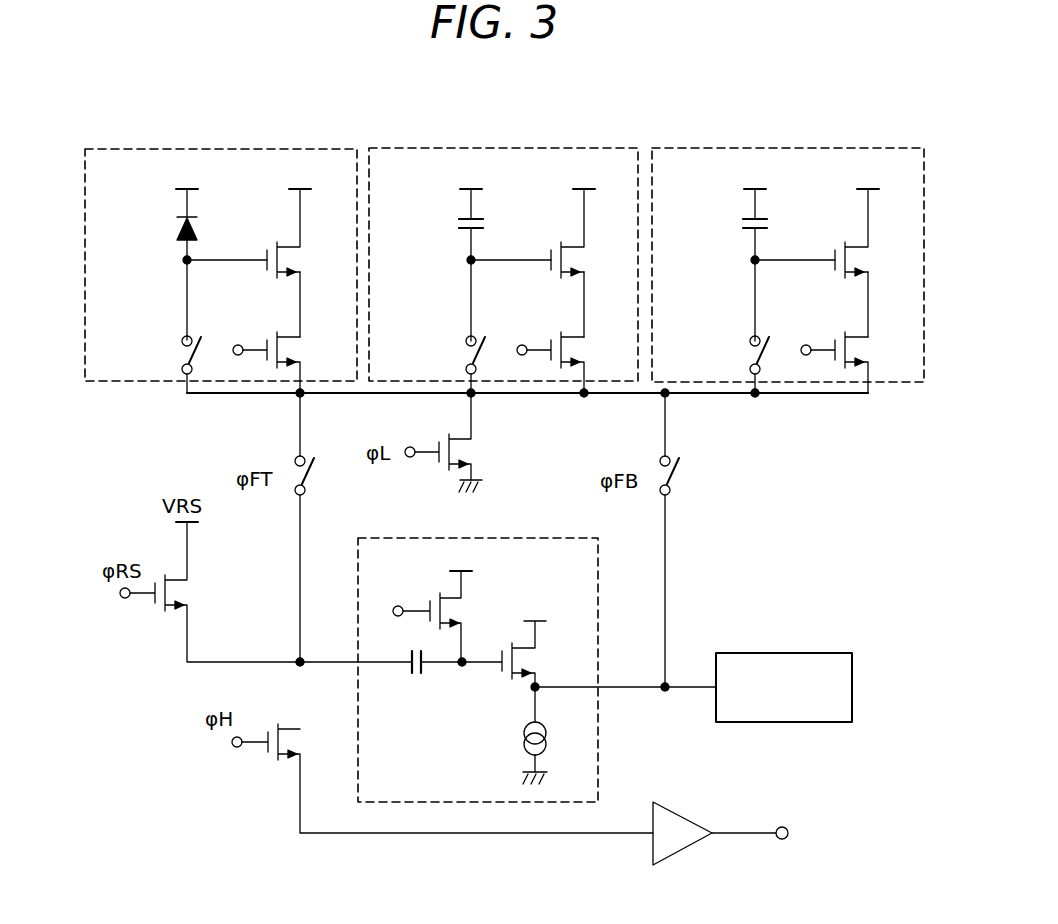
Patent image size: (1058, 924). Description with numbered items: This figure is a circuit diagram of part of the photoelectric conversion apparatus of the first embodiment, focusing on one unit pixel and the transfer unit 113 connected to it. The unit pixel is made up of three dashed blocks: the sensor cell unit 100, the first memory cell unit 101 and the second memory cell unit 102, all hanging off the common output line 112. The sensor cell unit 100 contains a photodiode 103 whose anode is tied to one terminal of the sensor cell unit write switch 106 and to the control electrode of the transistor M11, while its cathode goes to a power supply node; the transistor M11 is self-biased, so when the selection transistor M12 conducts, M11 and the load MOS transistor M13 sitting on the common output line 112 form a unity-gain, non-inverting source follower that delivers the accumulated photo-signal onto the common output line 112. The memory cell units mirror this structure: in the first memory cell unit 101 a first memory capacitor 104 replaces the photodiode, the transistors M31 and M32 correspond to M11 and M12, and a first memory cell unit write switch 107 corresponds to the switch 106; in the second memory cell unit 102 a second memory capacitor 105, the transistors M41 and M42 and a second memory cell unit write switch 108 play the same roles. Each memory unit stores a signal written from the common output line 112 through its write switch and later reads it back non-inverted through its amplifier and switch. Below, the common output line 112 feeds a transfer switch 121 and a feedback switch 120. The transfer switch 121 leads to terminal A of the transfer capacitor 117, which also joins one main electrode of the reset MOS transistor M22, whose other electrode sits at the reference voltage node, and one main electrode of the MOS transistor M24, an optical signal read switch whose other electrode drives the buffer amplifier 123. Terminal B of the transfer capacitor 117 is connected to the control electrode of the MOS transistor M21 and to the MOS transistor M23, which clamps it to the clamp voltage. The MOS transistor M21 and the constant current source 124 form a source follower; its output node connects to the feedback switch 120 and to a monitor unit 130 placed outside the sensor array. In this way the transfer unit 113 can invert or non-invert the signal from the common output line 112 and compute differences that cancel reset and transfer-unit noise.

The sensor cell unit 100 is at (213, 149).
The first memory cell unit 101 is at (496, 148).
The second memory cell unit 102 is at (780, 148).
The photodiode 103 is at (200, 231).
The first memory capacitor 104 is at (486, 224).
The second memory capacitor 105 is at (770, 224).
The sensor cell unit write switch 106 is at (178, 373).
The first memory cell unit write switch 107 is at (482, 357).
The second memory cell unit write switch 108 is at (766, 357).
The common output line 112 is at (850, 397).
The transfer unit 113 is at (437, 538).
The transfer capacitor 117 is at (413, 679).
The feedback switch 120 is at (658, 470).
The transfer switch 121 is at (293, 470).
The buffer amplifier 123 is at (676, 816).
The constant current source 124 is at (522, 736).
The monitor unit 130 is at (787, 653).
The transistor M11 is at (330, 243).
The MOS transistor M12 is at (330, 333).
The transistor M31 is at (613, 243).
The transistor M32 is at (613, 333).
The transistor M41 is at (897, 243).
The transistor M42 is at (897, 333).
The load MOS transistor M13 is at (466, 449).
The MOS transistor M22 is at (182, 592).
The MOS transistor M23 is at (458, 599).
The MOS transistor M21 is at (565, 651).
The MOS transistor M24 is at (294, 744).